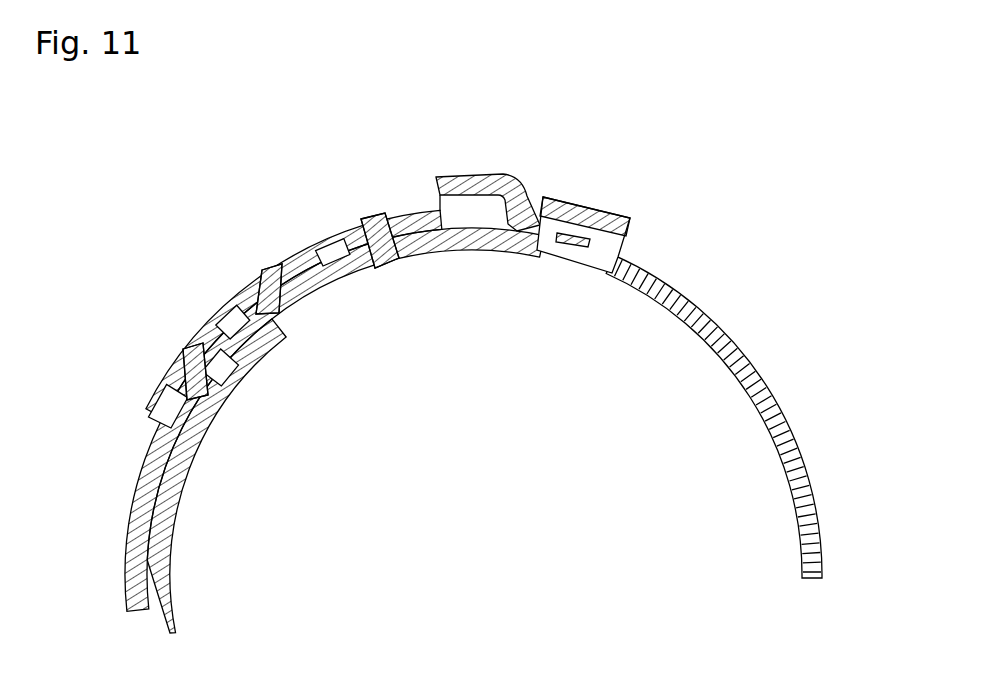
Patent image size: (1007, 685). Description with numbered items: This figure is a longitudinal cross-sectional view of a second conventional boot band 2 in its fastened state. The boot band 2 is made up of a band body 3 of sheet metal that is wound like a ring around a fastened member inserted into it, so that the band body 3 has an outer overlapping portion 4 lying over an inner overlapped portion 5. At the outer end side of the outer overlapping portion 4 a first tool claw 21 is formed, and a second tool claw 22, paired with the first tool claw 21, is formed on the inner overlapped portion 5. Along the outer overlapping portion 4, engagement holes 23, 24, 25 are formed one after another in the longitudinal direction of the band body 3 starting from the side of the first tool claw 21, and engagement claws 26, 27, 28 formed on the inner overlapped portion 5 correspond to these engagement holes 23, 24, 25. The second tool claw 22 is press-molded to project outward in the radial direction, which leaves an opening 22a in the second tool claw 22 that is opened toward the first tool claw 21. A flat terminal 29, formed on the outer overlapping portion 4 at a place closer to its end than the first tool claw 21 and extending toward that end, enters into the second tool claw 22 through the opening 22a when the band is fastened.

The second conventional boot band 2 is at (776, 290).
The band body 3 is at (824, 490).
The outer overlapping portion 4 is at (207, 330).
The inner overlapped portion 5 is at (462, 259).
The first tool claw 21 is at (460, 176).
The second tool claw 22 is at (630, 194).
The opening 22a is at (603, 246).
The engagement hole 23 is at (332, 250).
The engagement hole 24 is at (237, 317).
The engagement hole 25 is at (170, 408).
The engagement claw 26 is at (368, 214).
The engagement claw 27 is at (263, 280).
The engagement claw 28 is at (188, 354).
The flat terminal 29 is at (563, 216).